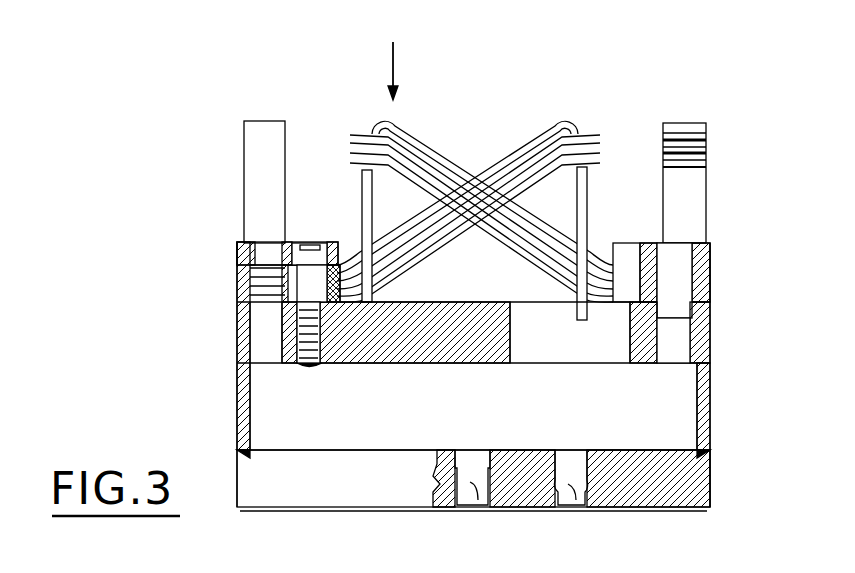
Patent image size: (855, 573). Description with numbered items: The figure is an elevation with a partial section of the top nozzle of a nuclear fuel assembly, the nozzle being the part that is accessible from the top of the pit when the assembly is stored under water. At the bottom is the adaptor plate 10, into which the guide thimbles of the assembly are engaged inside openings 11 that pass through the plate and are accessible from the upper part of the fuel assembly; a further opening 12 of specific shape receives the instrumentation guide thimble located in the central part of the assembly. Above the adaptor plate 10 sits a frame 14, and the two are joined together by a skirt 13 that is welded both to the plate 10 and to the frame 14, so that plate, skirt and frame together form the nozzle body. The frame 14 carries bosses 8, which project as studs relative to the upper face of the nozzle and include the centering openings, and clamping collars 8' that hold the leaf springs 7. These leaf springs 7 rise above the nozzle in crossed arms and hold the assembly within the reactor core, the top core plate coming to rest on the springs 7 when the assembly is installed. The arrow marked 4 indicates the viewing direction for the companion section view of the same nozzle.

The section line / viewing direction arrow 4 is at (392, 52).
The leaf springs 7 is at (273, 143).
The bosses 8 is at (691, 280).
The clamping collars 8' is at (259, 290).
The adaptor plate 10 is at (703, 487).
The openings 11 is at (567, 492).
The opening of specific shape 12 is at (473, 492).
The skirt 13 is at (240, 410).
The frame 14 is at (705, 335).